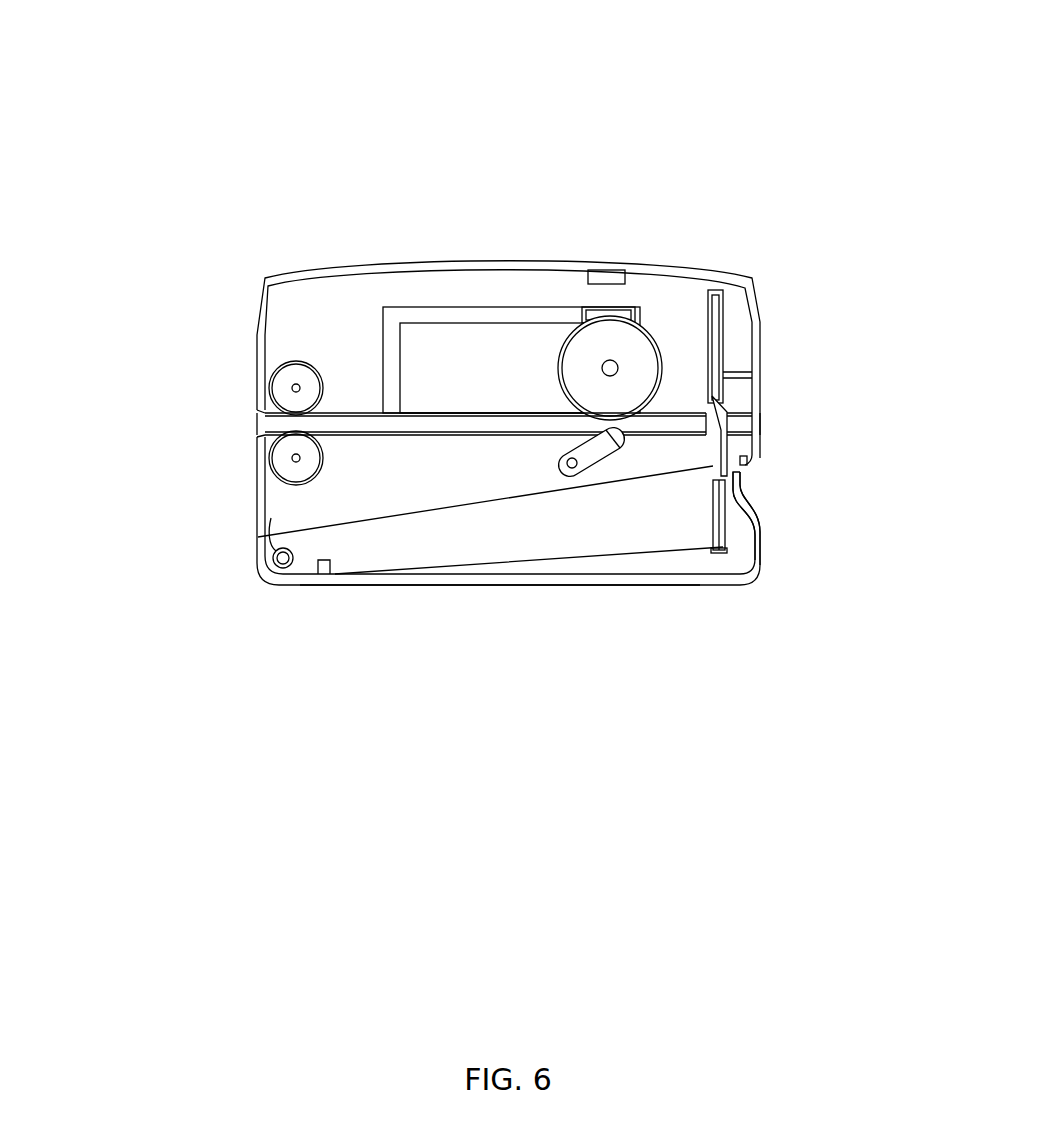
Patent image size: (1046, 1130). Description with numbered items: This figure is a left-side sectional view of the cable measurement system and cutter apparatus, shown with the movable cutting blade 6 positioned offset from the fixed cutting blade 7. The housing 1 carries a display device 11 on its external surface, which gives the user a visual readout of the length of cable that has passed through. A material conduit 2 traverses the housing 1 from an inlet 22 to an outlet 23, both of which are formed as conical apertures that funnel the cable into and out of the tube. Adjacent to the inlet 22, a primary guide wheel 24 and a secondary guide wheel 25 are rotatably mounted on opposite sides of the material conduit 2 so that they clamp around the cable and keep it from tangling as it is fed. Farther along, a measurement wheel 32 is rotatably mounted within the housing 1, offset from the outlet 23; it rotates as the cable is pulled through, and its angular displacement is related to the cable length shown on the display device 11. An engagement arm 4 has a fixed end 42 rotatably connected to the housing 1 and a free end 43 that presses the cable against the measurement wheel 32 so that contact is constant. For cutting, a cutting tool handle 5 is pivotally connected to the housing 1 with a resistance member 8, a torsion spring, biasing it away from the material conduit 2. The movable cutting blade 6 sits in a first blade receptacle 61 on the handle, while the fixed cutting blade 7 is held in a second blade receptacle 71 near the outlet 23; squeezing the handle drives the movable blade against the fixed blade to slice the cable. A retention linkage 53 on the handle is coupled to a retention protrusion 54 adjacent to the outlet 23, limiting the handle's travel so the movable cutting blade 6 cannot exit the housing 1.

The housing 1 is at (682, 272).
The display device 11 is at (455, 350).
The material conduit 2 is at (345, 425).
The inlet 22 is at (262, 428).
The outlet 23 is at (758, 428).
The primary guide wheel 24 is at (282, 378).
The secondary guide wheel 25 is at (283, 467).
The measurement wheel 32 is at (580, 372).
The engagement arm 4 is at (565, 457).
The fixed end 42 is at (564, 468).
The free end 43 is at (613, 447).
The cutting tool handle 5 is at (633, 578).
The retention linkage 53 is at (743, 480).
The retention protrusion 54 is at (748, 465).
The movable cutting blade 6 is at (712, 470).
The first blade receptacle 61 is at (720, 552).
The fixed cutting blade 7 is at (713, 398).
The second blade receptacle 71 is at (719, 352).
The resistance member 8 is at (278, 572).